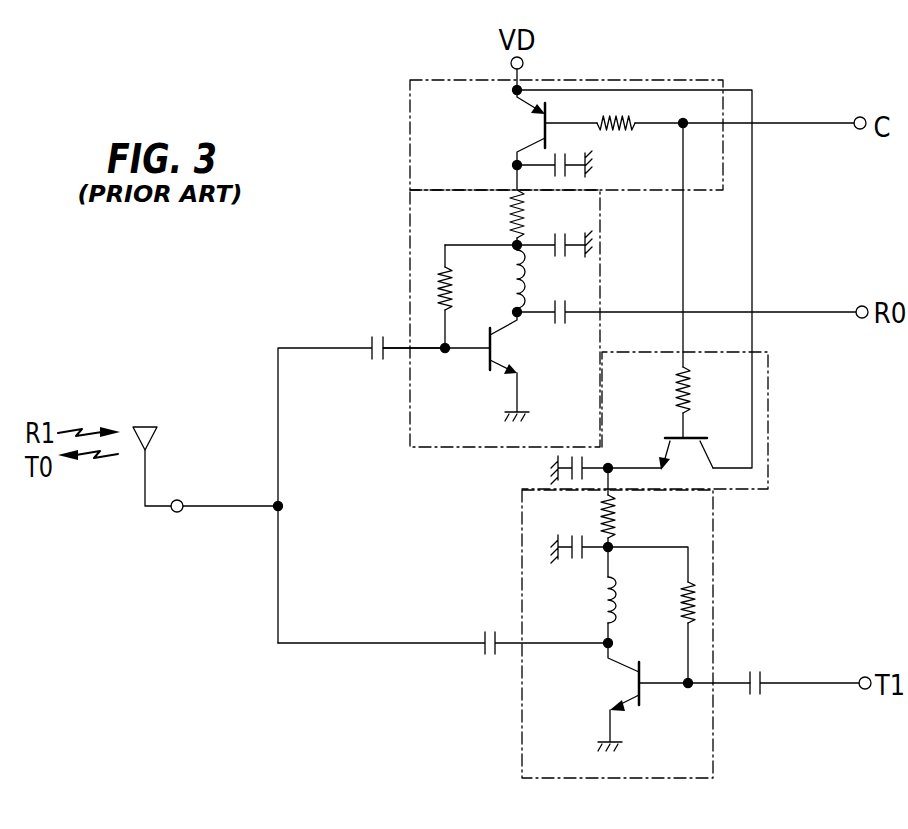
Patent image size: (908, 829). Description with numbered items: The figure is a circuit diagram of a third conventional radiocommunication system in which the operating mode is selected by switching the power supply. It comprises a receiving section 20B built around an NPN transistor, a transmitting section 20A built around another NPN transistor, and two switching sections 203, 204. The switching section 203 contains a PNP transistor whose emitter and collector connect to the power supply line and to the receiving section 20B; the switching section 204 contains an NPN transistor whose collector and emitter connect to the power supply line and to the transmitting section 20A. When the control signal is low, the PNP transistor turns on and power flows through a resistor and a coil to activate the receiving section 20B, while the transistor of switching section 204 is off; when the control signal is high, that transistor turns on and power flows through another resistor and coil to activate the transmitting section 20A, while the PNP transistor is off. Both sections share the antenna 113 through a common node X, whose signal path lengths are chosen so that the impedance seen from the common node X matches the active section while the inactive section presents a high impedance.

The switching section 203 is at (410, 125).
The receiving section 20B is at (410, 233).
The switching section 204 is at (768, 378).
The transmitting section 20A is at (713, 550).
The antenna 113 is at (153, 440).
The common node X is at (278, 506).